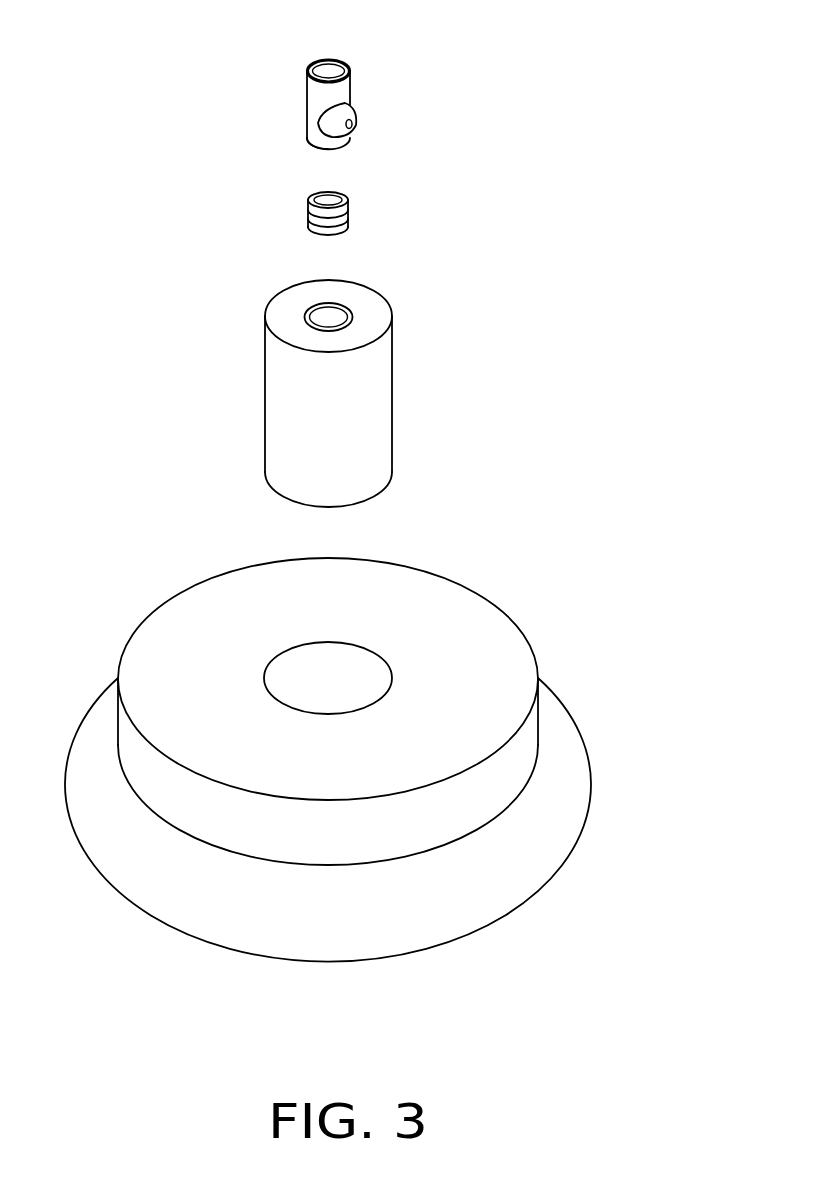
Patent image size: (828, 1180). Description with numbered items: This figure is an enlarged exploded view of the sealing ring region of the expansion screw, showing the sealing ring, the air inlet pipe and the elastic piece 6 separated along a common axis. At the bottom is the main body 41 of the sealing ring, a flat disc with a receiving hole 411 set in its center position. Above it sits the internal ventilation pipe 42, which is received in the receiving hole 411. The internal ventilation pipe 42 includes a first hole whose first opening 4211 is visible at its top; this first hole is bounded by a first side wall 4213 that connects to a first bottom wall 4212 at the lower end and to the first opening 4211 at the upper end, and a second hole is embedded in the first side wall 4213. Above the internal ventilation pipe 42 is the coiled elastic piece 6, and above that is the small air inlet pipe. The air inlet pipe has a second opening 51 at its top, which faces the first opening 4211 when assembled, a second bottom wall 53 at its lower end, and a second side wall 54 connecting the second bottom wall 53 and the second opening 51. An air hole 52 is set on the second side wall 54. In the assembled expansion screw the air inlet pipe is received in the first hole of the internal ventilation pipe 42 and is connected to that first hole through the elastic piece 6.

The main body 41 is at (374, 760).
The receiving hole 411 is at (336, 667).
The internal ventilation pipe 42 is at (398, 396).
The first opening 4211 is at (333, 320).
The first bottom wall 4212 is at (382, 485).
The first side wall 4213 is at (377, 448).
The second opening 51 is at (332, 58).
The air hole 52 is at (353, 121).
The second bottom wall 53 is at (317, 145).
The second side wall 54 is at (318, 100).
The elastic piece 6 is at (347, 200).